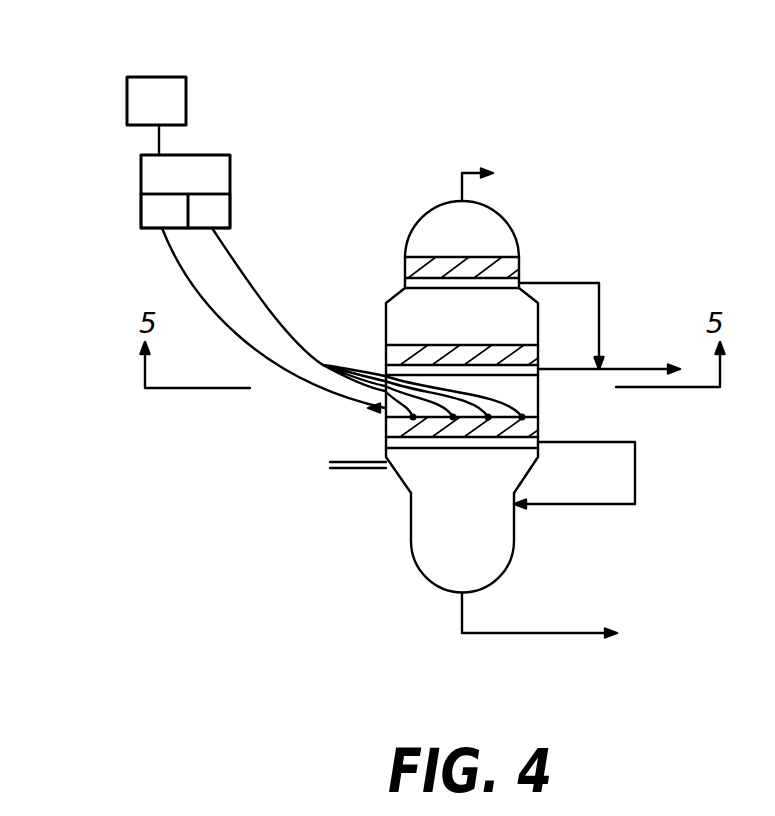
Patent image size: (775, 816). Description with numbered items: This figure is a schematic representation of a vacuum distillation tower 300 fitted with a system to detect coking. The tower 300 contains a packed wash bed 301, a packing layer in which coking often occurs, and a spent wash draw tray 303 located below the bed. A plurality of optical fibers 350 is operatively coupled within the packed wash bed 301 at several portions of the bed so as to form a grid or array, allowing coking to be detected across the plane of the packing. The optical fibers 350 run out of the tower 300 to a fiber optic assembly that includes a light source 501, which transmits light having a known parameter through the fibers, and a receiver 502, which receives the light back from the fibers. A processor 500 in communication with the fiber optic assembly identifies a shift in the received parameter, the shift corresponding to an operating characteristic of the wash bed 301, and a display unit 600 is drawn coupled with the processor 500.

The display/output unit 600 is at (186, 83).
The processor 500 is at (220, 155).
The light source 501 is at (141, 217).
The receiver 502 is at (232, 220).
The vacuum distillation tower 300 is at (523, 201).
The plurality of optical fibers 350 is at (326, 346).
The packed wash bed 301 is at (385, 428).
The spent wash draw tray 303 is at (386, 445).